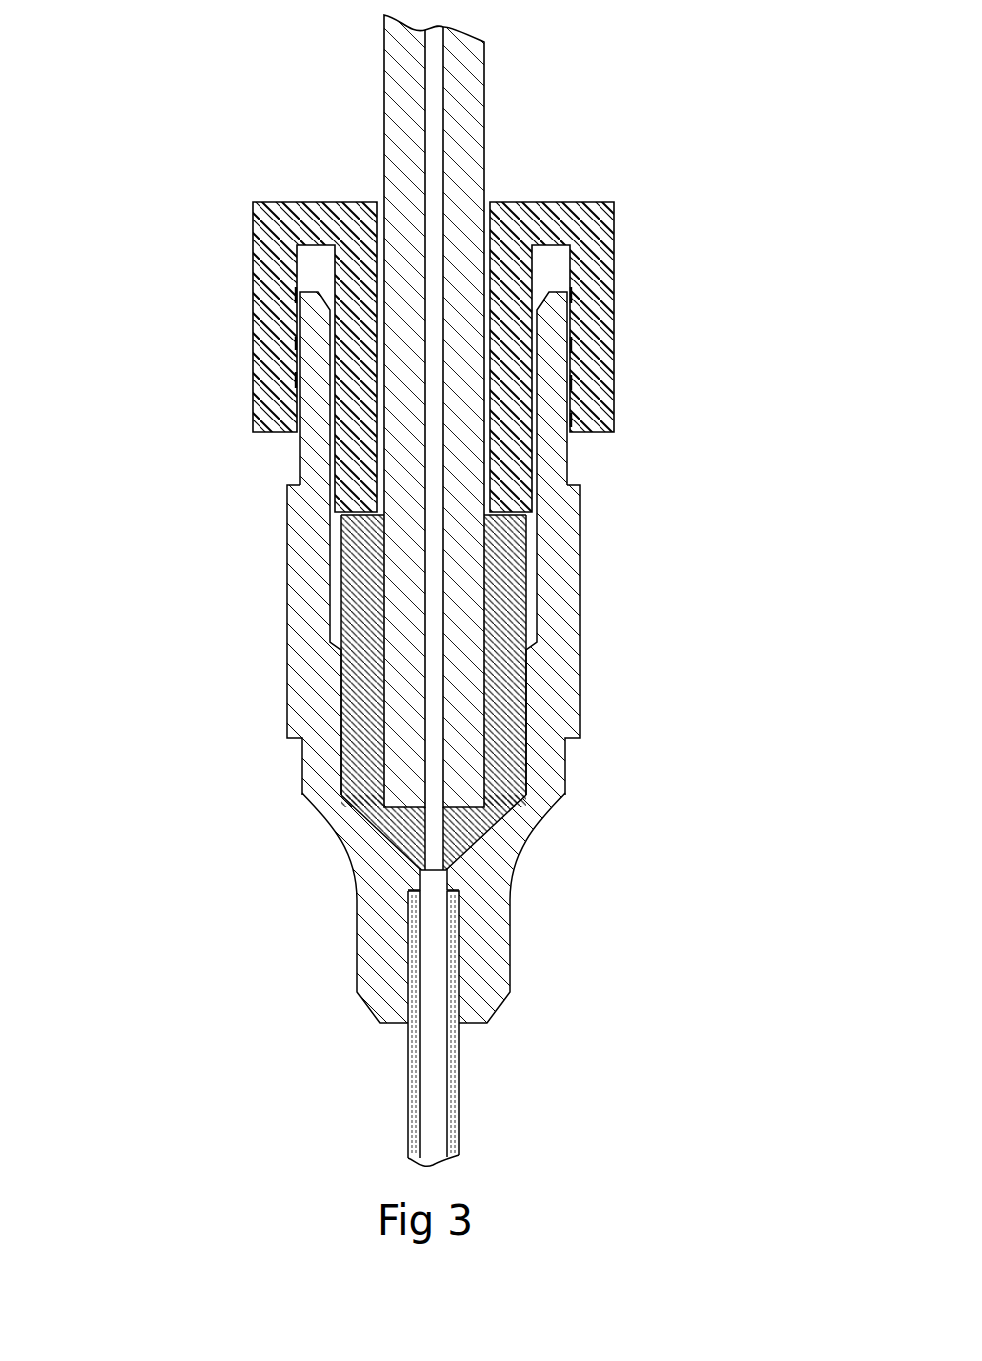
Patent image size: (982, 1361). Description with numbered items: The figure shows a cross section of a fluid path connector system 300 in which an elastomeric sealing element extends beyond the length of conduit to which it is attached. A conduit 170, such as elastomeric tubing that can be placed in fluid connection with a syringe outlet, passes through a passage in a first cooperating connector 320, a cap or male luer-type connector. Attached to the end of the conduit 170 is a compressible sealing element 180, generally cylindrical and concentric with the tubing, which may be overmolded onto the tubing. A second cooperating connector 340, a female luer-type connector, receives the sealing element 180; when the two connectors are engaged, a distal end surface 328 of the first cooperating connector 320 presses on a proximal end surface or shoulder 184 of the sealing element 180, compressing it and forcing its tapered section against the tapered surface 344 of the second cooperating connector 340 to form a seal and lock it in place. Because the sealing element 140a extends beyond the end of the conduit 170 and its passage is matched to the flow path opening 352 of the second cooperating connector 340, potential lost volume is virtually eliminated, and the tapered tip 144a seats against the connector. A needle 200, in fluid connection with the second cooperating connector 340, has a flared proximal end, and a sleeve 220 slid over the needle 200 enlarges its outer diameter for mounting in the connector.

The connector system 300 is at (208, 273).
The conduit 170 is at (493, 103).
The first cooperating connector 320 is at (622, 270).
The distal end surface 328 is at (368, 505).
The proximal end surface 184 is at (347, 528).
The sealing element 180 is at (527, 570).
The second cooperating connector 340 is at (585, 622).
The sealing element 140a is at (510, 720).
The conical tip of ferrule 144a is at (492, 822).
The tapered surface 344 is at (383, 847).
The flow path opening 352 is at (435, 870).
The needle 200 is at (455, 1030).
The sleeve 220 is at (463, 1085).